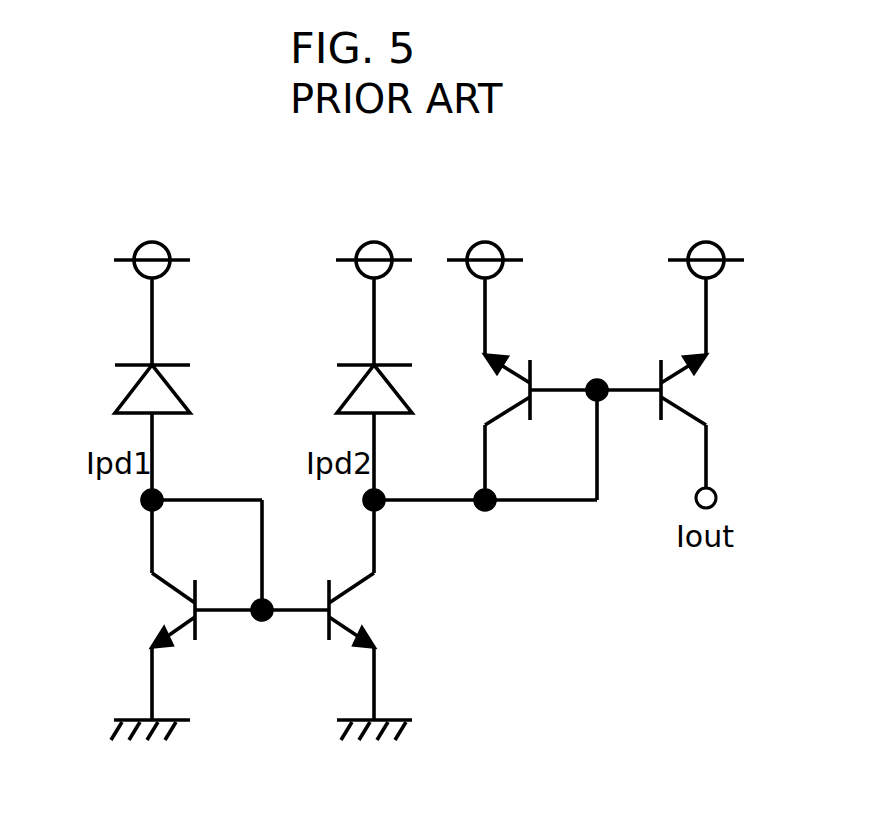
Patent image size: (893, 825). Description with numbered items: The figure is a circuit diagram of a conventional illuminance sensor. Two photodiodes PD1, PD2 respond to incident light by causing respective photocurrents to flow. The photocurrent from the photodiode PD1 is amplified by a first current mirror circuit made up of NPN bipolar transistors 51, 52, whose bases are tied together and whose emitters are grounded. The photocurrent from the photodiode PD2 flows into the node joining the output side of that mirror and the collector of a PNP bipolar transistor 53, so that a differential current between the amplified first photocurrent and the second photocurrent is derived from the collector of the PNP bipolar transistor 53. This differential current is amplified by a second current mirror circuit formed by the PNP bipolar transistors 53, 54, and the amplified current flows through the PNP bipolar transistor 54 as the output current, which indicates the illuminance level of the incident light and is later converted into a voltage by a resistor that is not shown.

The photodiode PD1 is at (105, 358).
The photodiode PD2 is at (330, 358).
The NPN bipolar transistor 51 is at (186, 606).
The NPN bipolar transistor 52 is at (343, 612).
The PNP bipolar transistor 53 is at (523, 387).
The PNP bipolar transistor 54 is at (676, 390).